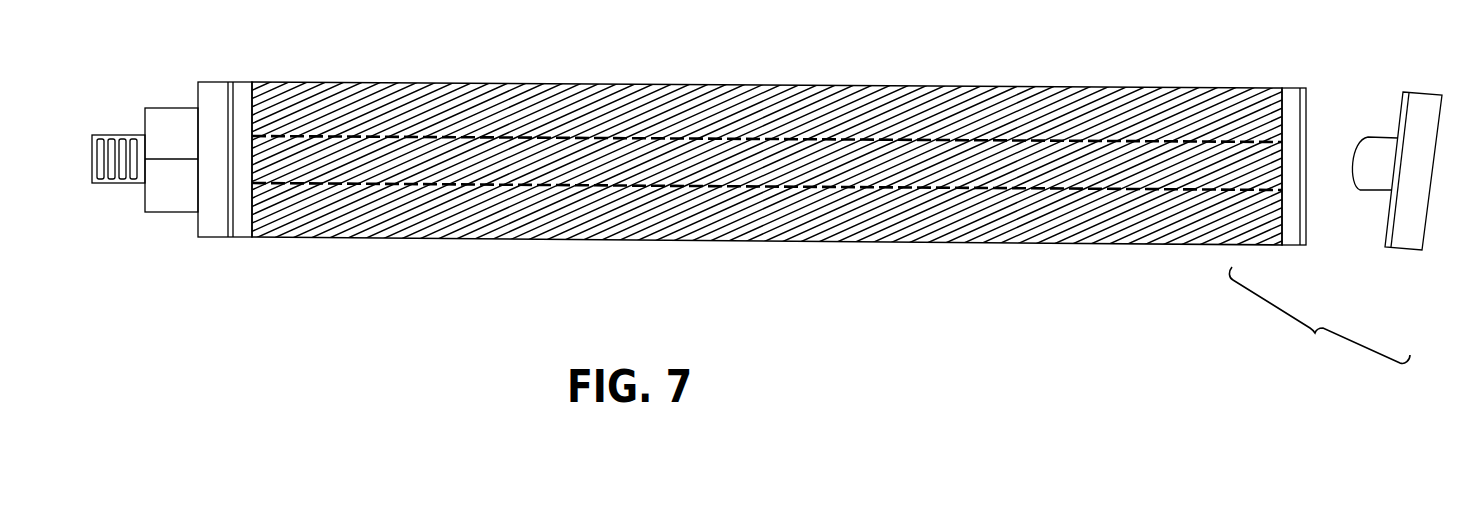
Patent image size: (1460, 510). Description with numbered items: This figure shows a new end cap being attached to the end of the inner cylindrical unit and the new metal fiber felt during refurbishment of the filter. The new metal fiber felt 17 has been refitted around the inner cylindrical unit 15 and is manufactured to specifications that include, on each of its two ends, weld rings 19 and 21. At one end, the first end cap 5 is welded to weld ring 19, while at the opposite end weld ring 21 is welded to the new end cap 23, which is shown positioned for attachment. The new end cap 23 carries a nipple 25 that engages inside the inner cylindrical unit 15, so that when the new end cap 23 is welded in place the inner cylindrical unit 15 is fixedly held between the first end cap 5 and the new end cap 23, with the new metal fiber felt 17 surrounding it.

The first end cap 5 is at (178, 107).
The inner cylindrical unit 15 is at (604, 135).
The new metal fiber felt 17 is at (1048, 85).
The weld ring 19 is at (245, 103).
The weld ring 21 is at (1292, 100).
The new end cap 23 is at (1420, 120).
The nipple 25 is at (1363, 167).